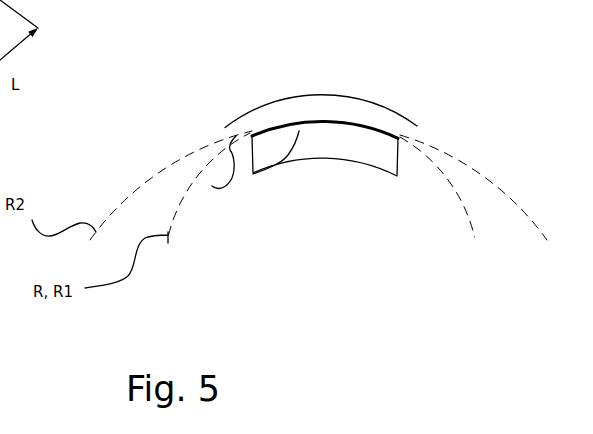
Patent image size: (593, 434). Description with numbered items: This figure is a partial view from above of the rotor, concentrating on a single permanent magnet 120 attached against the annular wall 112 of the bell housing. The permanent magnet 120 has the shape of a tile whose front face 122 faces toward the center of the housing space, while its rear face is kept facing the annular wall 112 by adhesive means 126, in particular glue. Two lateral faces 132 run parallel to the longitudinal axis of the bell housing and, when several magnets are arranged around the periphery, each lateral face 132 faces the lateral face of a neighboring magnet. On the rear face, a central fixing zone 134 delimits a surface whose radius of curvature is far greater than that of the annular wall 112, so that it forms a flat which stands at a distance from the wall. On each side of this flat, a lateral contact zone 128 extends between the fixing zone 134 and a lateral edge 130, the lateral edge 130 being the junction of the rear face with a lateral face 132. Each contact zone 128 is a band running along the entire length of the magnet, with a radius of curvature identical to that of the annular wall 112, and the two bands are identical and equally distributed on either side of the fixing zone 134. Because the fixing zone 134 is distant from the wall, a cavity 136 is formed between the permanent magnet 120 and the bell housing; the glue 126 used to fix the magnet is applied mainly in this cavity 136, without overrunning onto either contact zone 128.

The annular wall 112 is at (212, 186).
The permanent magnet 120 is at (337, 154).
The front face 122 is at (318, 158).
The adhesive means 126 is at (344, 123).
The lateral contact zone 128 is at (266, 130).
The lateral edge 130 is at (227, 126).
The lateral face 132 is at (252, 138).
The fixing zone 134 is at (281, 163).
The receiving cavity 136 is at (315, 121).